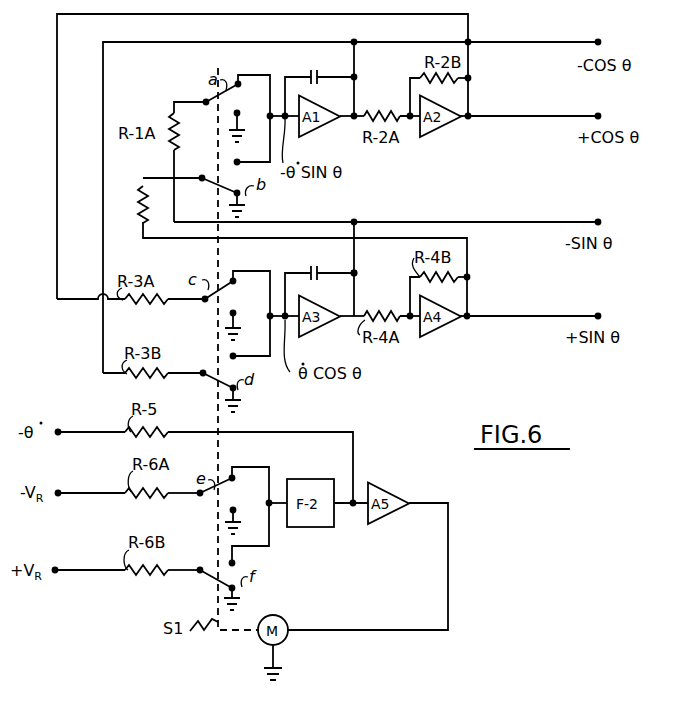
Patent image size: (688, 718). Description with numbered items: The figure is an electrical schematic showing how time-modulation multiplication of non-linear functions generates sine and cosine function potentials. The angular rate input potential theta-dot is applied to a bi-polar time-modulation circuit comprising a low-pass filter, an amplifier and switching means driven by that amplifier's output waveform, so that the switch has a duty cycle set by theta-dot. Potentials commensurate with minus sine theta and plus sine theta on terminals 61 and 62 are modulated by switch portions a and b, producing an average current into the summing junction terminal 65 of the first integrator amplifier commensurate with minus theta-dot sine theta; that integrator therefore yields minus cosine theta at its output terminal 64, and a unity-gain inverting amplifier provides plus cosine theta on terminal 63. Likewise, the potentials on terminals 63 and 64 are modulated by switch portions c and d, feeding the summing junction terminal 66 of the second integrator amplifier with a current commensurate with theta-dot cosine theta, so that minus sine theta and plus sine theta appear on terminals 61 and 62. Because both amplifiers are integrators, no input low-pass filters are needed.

The terminal 61 is at (354, 222).
The terminal 62 is at (467, 319).
The terminal 63 is at (470, 117).
The integrator output terminal 64 is at (371, 80).
The summing junction terminal 65 is at (317, 84).
The summing junction terminal 66 is at (270, 268).